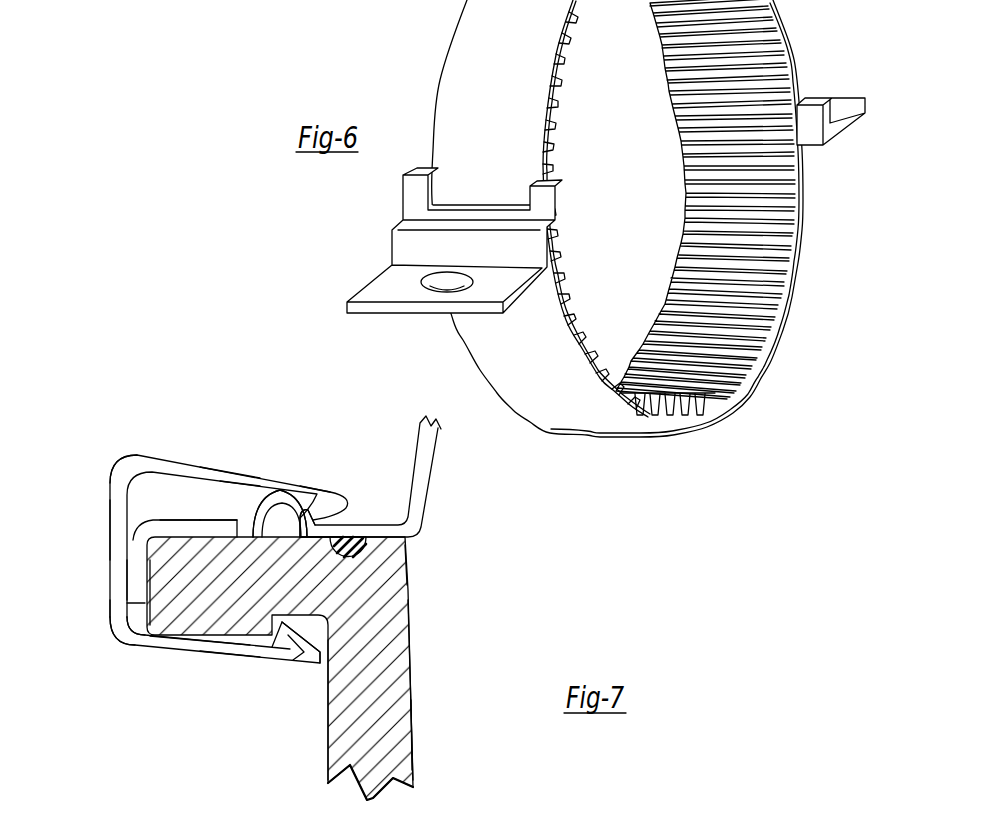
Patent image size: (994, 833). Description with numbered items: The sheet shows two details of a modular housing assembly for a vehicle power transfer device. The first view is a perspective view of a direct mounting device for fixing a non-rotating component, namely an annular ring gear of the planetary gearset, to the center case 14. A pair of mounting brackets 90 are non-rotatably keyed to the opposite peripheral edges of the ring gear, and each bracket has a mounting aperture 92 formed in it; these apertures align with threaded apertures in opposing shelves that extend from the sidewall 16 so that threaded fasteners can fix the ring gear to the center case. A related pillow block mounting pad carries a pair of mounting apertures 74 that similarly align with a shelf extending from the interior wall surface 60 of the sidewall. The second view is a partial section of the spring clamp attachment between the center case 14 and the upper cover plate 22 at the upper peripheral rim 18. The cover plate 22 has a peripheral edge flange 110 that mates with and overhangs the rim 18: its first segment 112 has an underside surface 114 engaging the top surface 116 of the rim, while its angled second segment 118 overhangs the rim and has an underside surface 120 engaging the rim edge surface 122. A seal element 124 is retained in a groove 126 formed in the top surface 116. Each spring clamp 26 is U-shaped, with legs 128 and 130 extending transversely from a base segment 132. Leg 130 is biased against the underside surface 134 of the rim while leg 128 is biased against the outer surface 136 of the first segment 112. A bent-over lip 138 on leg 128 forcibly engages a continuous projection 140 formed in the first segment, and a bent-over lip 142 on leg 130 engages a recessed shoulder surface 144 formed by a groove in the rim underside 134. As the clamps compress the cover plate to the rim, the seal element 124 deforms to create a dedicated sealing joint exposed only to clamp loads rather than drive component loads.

In FIG. 6, the mounting apertures 74 is at (167, 0).
In FIG. 6, the mounting brackets 90 is at (590, 167).
In FIG. 6, the mounting aperture 92 is at (440, 278).
In FIG. 7, the center case 14 is at (337, 667).
In FIG. 7, the sidewall 16 is at (385, 688).
In FIG. 7, the upper peripheral rim 18 is at (205, 603).
In FIG. 7, the upper cover plate 22 is at (400, 456).
In FIG. 7, the spring clamps 26 is at (212, 549).
In FIG. 7, the interior wall surface 60 is at (411, 745).
In FIG. 7, the peripheral edge flange 110 is at (227, 517).
In FIG. 7, the first segment 112 is at (357, 527).
In FIG. 7, the underside surface 114 is at (245, 500).
In FIG. 7, the top surface 116 is at (318, 478).
In FIG. 7, the second segment 118 is at (127, 560).
In FIG. 7, the underside surface 120 is at (155, 582).
In FIG. 7, the edge surface 122 is at (112, 640).
In FIG. 7, the seal element 124 is at (368, 560).
In FIG. 7, the groove 126 is at (372, 580).
In FIG. 7, the leg 128 is at (213, 508).
In FIG. 7, the leg 130 is at (255, 660).
In FIG. 7, the base segment 132 is at (110, 500).
In FIG. 7, the underside surface 134 is at (122, 655).
In FIG. 7, the outer surface 136 is at (185, 521).
In FIG. 7, the bent-over lip 138 is at (343, 483).
In FIG. 7, the continuous projection 140 is at (282, 492).
In FIG. 7, the bent-over lip 142 is at (293, 645).
In FIG. 7, the recessed shoulder surface 144 is at (238, 604).